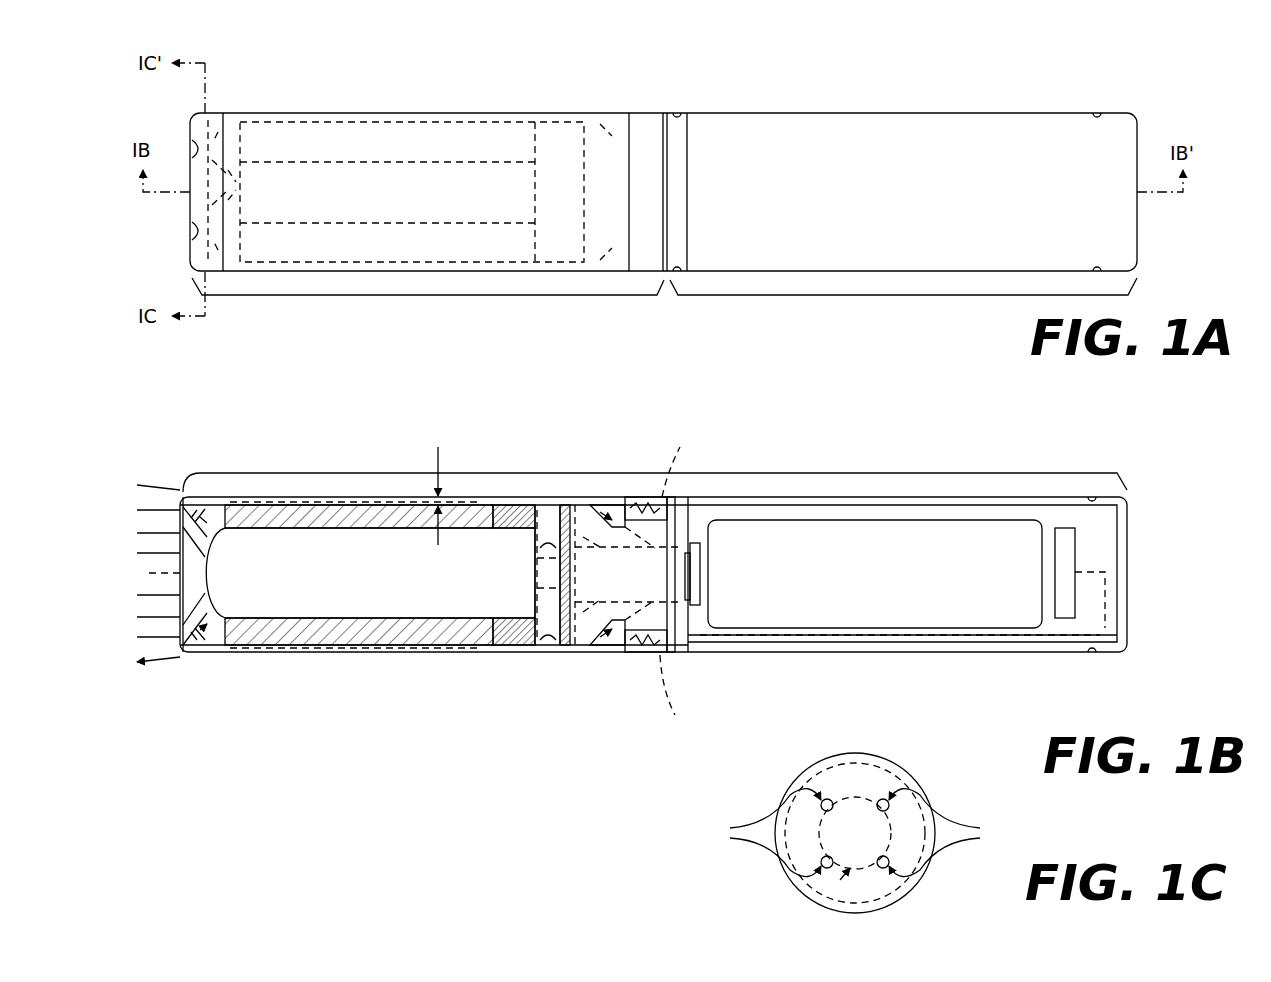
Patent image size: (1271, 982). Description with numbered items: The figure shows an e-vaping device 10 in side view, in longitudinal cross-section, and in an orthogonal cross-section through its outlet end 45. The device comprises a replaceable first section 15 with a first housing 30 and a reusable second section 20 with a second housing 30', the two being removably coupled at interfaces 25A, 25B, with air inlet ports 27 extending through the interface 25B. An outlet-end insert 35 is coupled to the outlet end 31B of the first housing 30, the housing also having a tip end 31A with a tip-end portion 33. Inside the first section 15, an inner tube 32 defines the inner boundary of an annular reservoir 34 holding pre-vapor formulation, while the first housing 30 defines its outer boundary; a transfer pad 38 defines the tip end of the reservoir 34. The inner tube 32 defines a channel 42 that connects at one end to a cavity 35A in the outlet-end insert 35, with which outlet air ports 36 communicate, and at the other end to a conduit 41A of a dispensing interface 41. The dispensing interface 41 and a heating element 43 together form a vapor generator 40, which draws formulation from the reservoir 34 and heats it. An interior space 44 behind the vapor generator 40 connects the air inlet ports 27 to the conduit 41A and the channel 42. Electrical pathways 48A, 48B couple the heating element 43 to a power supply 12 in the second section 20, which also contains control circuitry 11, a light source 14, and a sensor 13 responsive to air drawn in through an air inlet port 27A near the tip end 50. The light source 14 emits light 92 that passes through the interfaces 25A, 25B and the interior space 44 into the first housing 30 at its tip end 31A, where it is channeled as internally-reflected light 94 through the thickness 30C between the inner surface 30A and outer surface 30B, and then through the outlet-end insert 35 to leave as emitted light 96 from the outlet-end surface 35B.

In FIG. 1A, the e-vaping device 10 is at (612, 80).
In FIG. 1B, the e-vaping device 10 is at (972, 450).
In FIG. 1B, the control circuitry 11 is at (700, 540).
In FIG. 1B, the power supply 12 is at (875, 574).
In FIG. 1B, the sensor 13 is at (1065, 528).
In FIG. 1B, the light source 14 is at (690, 605).
In FIG. 1A, the first section 15 is at (430, 297).
In FIG. 1B, the first section 15 is at (470, 472).
In FIG. 1A, the second section 20 is at (900, 297).
In FIG. 1B, the second section 20 is at (872, 472).
In FIG. 1A, the interface 25A is at (633, 122).
In FIG. 1B, the interface 25A is at (640, 655).
In FIG. 1A, the interface 25B is at (666, 118).
In FIG. 1B, the interface 25B is at (670, 655).
In FIG. 1A, the air inlet port 27 is at (688, 116).
In FIG. 1B, the air inlet port 27 is at (676, 497).
In FIG. 1A, the air inlet port 27A is at (1097, 113).
In FIG. 1B, the air inlet port 27A is at (1092, 497).
In FIG. 1A, the first housing 30 is at (426, 159).
In FIG. 1B, the first housing 30 is at (359, 601).
In FIG. 1A, the second housing 30' is at (946, 84).
In FIG. 1B, the second housing 30' is at (902, 601).
In FIG. 1B, the inner surface 30A is at (245, 515).
In FIG. 1B, the outer surface 30B is at (315, 497).
In FIG. 1B, the thickness 30C is at (438, 450).
In FIG. 1B, the tip end 31A is at (630, 483).
In FIG. 1B, the outlet end 31B is at (205, 490).
In FIG. 1B, the inner tube 32 is at (240, 625).
In FIG. 1B, the tip-end portion 33 is at (582, 660).
In FIG. 1B, the reservoir 34 is at (325, 500).
In FIG. 1A, the outlet-end insert 35 is at (212, 118).
In FIG. 1B, the outlet-end insert 35 is at (200, 650).
In FIG. 1C, the outlet-end insert 35 is at (905, 768).
In FIG. 1B, the cavity 35A is at (200, 575).
In FIG. 1C, the cavity 35A is at (790, 882).
In FIG. 1B, the outlet-end surface 35B is at (182, 645).
In FIG. 1A, the outlet air port 36 is at (188, 150).
In FIG. 1B, the outlet air port 36 is at (178, 518).
In FIG. 1C, the outlet air port 36 is at (856, 833).
In FIG. 1B, the transfer pad 38 is at (512, 642).
In FIG. 1B, the vapor generator 40 is at (537, 650).
In FIG. 1B, the dispensing interface 41 is at (545, 505).
In FIG. 1B, the conduit 41A is at (572, 555).
In FIG. 1B, the channel 42 is at (370, 573).
In FIG. 1B, the heating element 43 is at (560, 530).
In FIG. 1B, the interior space 44 is at (627, 573).
In FIG. 1A, the outlet end 45 is at (182, 135).
In FIG. 1B, the outlet end 45 is at (180, 488).
In FIG. 1B, the electrical pathway 48A is at (545, 645).
In FIG. 1B, the electrical pathway 48B is at (578, 510).
In FIG. 1A, the tip end 50 is at (1140, 108).
In FIG. 1B, the tip end 50 is at (1142, 520).
In FIG. 1B, the light 92 is at (677, 577).
In FIG. 1B, the internally-reflected light 94 is at (390, 497).
In FIG. 1B, the emitted light 96 is at (190, 650).